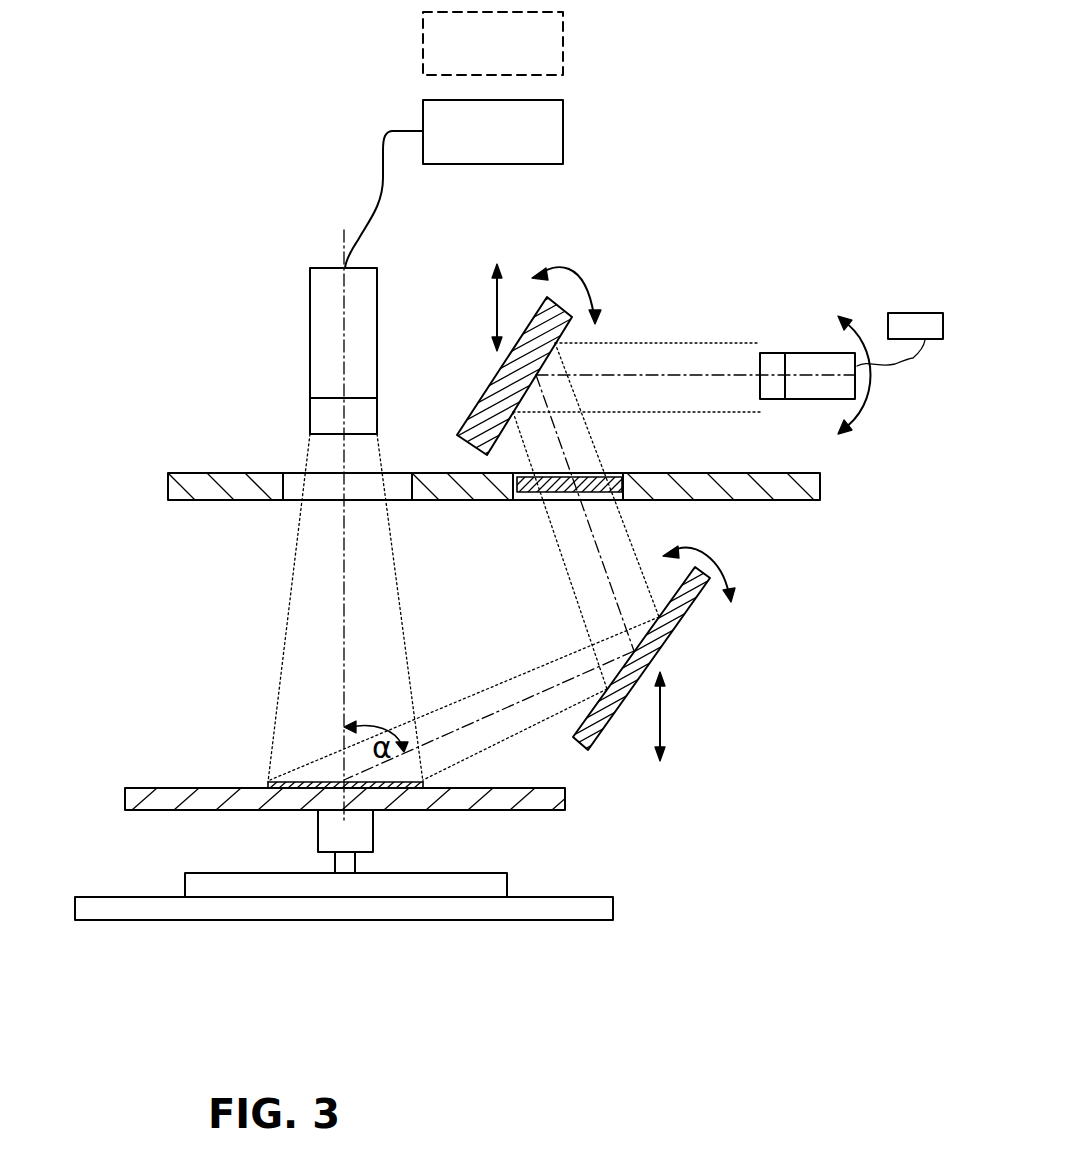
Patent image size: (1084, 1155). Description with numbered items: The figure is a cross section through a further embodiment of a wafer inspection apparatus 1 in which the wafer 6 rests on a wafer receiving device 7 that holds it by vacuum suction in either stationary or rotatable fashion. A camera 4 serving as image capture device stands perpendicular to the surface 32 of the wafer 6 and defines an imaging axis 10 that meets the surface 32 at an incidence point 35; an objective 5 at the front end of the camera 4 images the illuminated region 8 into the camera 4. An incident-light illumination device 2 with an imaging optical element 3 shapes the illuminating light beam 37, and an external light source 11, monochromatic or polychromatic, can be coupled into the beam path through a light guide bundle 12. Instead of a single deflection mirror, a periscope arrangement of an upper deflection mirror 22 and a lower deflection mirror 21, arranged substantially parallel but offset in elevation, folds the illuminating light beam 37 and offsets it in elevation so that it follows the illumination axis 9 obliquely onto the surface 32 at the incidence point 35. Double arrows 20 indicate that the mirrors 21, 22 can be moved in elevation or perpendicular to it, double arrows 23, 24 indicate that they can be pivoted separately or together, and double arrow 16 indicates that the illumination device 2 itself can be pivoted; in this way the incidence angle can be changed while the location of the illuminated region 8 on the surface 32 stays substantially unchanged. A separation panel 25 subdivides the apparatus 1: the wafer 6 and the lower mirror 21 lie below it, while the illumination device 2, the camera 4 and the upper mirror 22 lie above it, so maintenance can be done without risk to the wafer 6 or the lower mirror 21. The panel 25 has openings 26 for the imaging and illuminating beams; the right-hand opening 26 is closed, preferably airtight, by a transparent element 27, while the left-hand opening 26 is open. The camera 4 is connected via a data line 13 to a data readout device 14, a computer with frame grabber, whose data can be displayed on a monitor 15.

The wafer inspection apparatus 1 is at (205, 360).
The incident-light illumination device 2 is at (814, 353).
The imaging optical element 3 is at (775, 353).
The camera 4 is at (365, 325).
The objective 5 is at (322, 412).
The wafer 6 is at (566, 800).
The wafer receiving device 7 is at (362, 829).
The illuminated region 8 is at (290, 782).
The illumination axis 9 is at (497, 708).
The imaging axis 10 is at (344, 601).
The external light source 11 is at (917, 322).
The light guide bundle 12 is at (913, 360).
The data line 13 is at (383, 180).
The data readout device 14 is at (563, 133).
The monitor 15 is at (564, 40).
The double arrow 16 is at (863, 417).
The double arrows 20 is at (497, 307).
The lower deflection mirror 21 is at (667, 637).
The upper deflection mirror 22 is at (476, 424).
The double arrow 23 is at (723, 563).
The double arrow 24 is at (585, 266).
The separation panel 25 is at (190, 488).
The openings 26 is at (295, 496).
The transparent element 27 is at (530, 489).
The surface 32 is at (165, 787).
The incidence point 35 is at (337, 782).
The illuminating light beam 37 is at (490, 745).